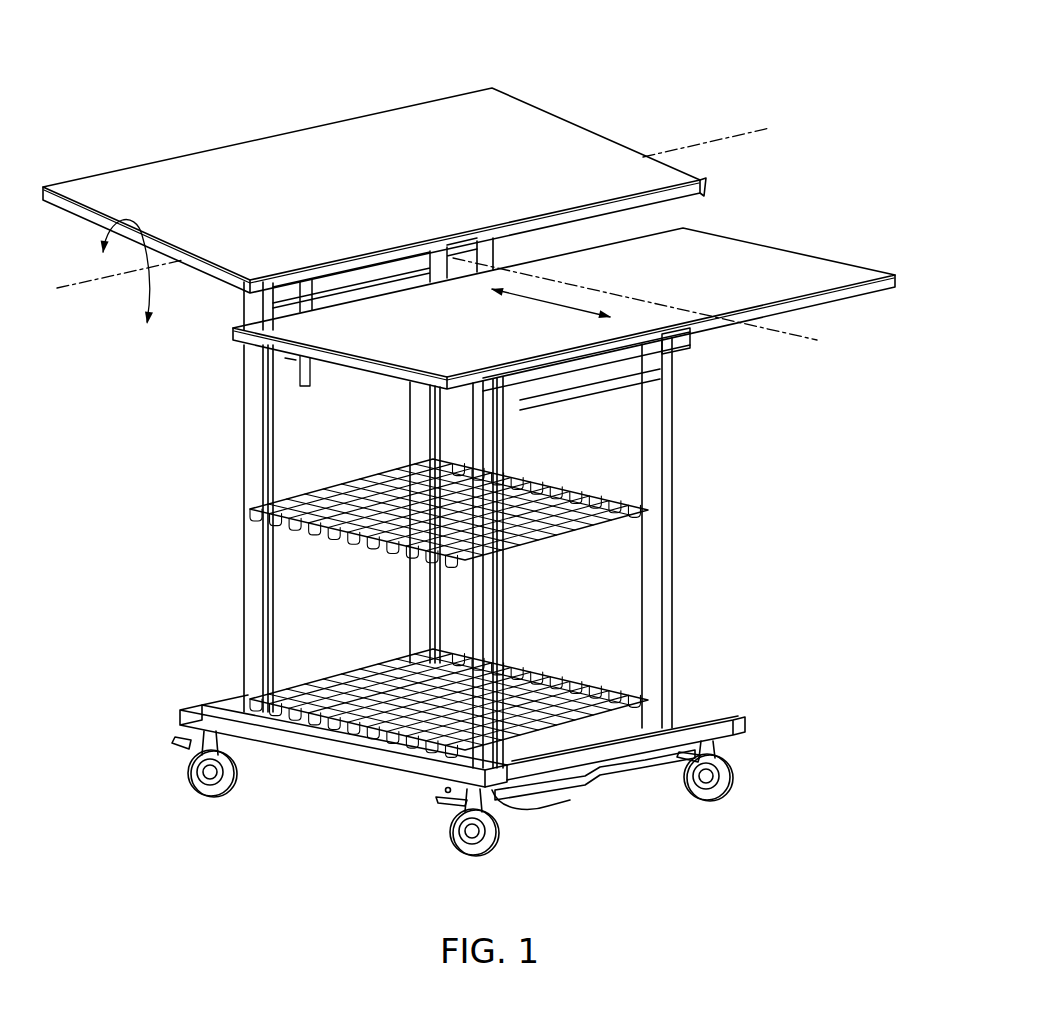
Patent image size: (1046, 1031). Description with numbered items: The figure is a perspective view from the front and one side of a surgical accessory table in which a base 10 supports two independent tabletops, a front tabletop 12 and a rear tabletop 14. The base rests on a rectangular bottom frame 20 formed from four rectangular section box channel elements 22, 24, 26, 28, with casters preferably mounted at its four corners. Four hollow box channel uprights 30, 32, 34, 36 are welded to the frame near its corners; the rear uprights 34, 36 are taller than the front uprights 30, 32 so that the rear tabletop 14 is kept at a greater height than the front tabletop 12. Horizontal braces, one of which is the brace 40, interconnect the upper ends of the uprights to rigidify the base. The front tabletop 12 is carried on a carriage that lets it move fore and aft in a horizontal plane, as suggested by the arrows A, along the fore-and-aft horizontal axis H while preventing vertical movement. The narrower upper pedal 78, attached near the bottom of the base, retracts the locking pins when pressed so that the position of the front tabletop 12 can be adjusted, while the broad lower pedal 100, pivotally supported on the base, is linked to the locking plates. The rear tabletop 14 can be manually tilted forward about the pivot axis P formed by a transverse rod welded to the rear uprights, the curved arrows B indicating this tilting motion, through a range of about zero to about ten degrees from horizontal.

The base 10 is at (162, 557).
The front tabletop 12 is at (828, 273).
The rear tabletop 14 is at (317, 152).
The bottom frame 20 is at (318, 822).
The box channel element 22 is at (410, 770).
The box channel element 24 is at (743, 723).
The box channel element 26 is at (682, 730).
The box channel element 28 is at (238, 712).
The front upright 30 is at (503, 606).
The front upright 32 is at (663, 562).
The rear upright 34 is at (280, 421).
The rear upright 36 is at (413, 606).
The horizontal brace 40 is at (583, 377).
The pedal 78 is at (585, 771).
The lower pedal 100 is at (527, 806).
The pivot axis P is at (730, 137).
The fore-and-aft horizontal axis H is at (777, 328).
The arrows A is at (545, 309).
The pivoting direction B is at (120, 288).